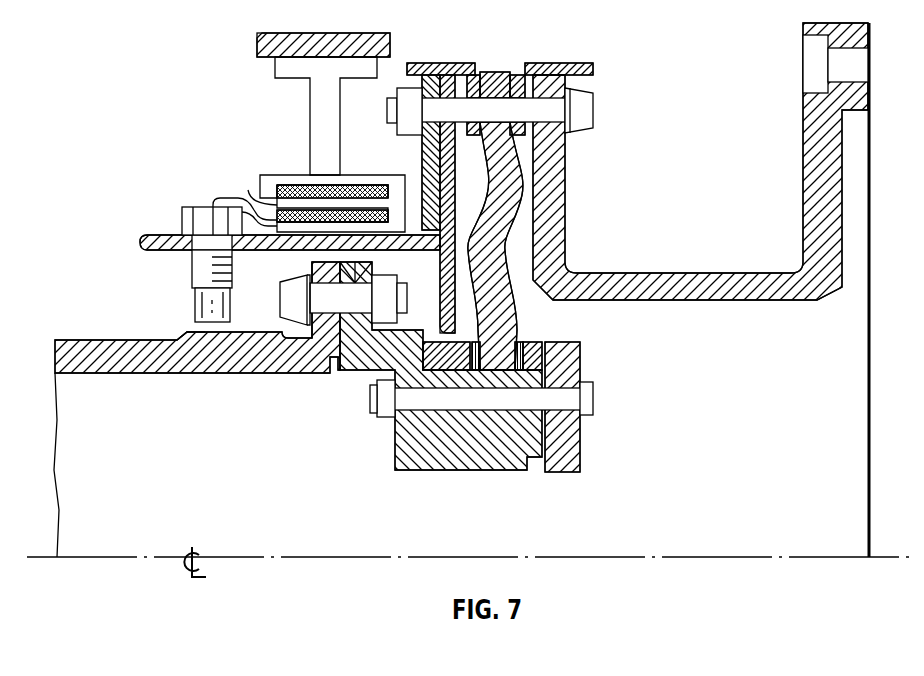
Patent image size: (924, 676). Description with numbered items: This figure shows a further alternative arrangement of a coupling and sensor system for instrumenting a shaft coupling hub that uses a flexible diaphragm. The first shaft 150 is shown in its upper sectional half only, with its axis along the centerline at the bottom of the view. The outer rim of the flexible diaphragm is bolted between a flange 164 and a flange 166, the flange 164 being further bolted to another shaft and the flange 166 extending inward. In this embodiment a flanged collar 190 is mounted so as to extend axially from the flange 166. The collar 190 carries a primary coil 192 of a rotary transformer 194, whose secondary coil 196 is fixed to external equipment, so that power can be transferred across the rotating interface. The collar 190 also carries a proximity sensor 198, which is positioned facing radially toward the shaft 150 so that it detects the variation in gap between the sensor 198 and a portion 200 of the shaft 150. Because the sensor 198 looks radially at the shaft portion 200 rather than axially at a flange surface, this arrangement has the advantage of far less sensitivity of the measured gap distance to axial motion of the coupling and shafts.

The first shaft 150 is at (175, 365).
The flange 164 is at (560, 193).
The flange 166 is at (425, 161).
The flanged collar 190 is at (302, 248).
The primary coil 192 is at (290, 183).
The rotary transformer 194 is at (297, 163).
The secondary coil 196 is at (248, 192).
The proximity sensor 198 is at (187, 222).
The portion of the shaft 200 is at (192, 328).